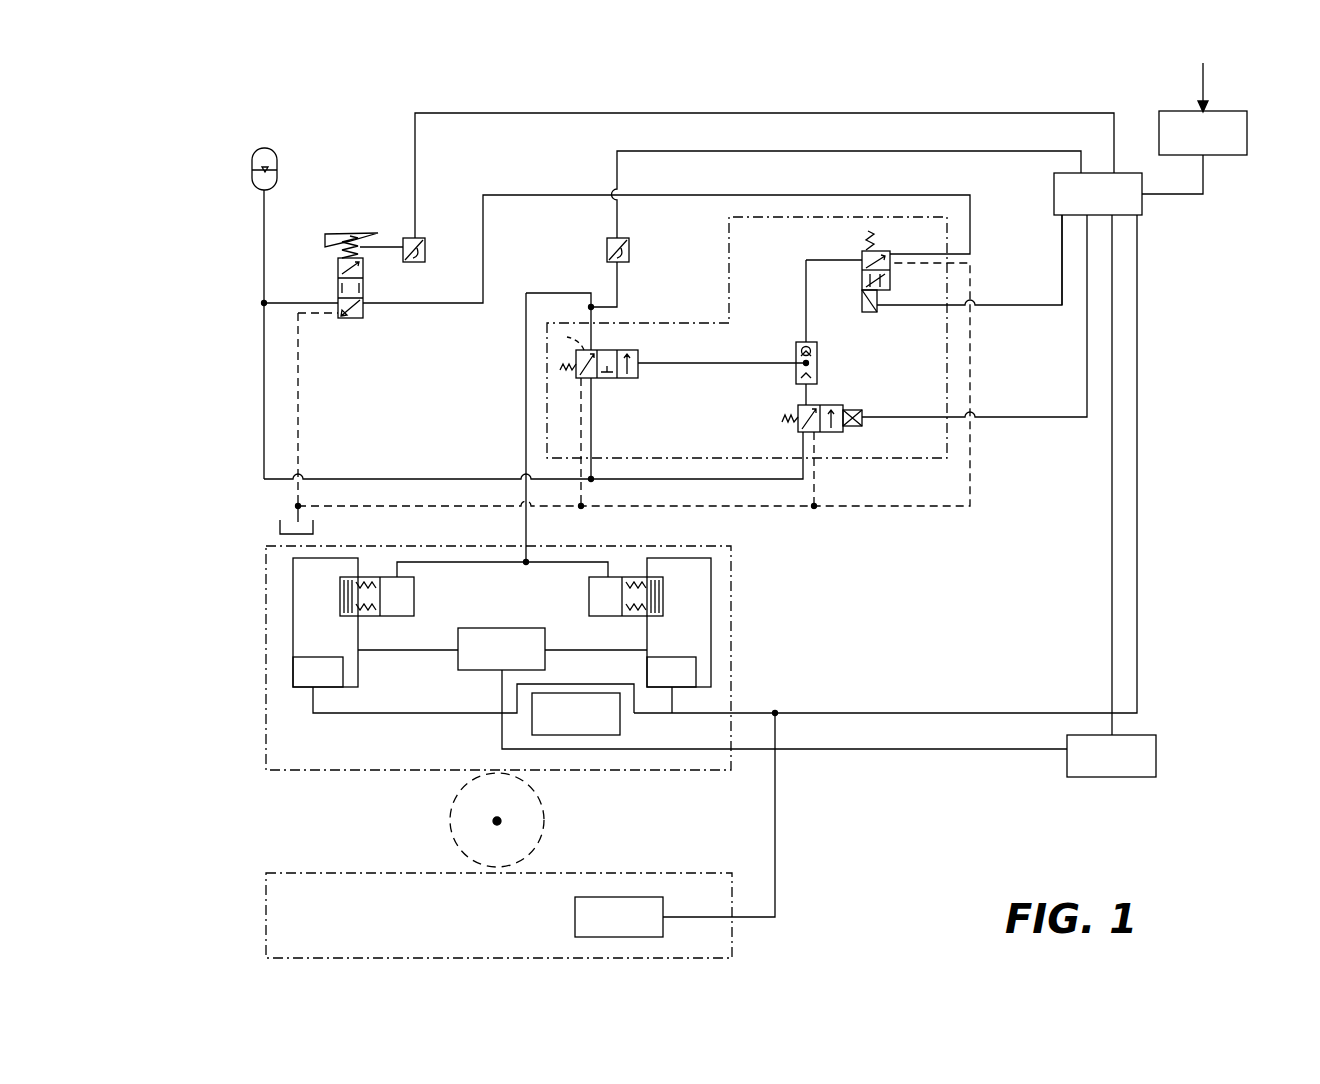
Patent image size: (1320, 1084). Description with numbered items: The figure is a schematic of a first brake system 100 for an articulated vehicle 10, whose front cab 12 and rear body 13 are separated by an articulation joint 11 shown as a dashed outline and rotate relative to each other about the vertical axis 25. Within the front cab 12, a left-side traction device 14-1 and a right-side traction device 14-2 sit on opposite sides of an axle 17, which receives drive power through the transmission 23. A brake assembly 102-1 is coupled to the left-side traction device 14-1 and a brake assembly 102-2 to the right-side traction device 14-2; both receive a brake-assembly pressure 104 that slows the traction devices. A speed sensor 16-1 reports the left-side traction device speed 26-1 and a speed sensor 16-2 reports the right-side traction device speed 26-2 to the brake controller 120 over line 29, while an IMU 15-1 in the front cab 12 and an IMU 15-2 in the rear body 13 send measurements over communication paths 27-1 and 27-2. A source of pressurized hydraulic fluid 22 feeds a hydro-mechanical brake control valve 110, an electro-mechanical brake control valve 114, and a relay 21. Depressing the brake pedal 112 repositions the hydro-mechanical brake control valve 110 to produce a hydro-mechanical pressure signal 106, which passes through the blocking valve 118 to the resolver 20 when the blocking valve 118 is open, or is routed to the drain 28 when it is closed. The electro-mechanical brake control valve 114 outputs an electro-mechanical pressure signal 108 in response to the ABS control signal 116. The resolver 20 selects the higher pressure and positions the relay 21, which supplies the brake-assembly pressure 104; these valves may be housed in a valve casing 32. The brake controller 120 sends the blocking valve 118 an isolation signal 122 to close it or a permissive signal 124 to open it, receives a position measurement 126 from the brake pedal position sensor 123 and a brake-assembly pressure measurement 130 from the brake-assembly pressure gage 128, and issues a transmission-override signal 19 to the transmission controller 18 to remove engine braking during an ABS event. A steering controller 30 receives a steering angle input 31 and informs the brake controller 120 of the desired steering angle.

The articulated vehicle 10 is at (206, 546).
The articulation joint 11 is at (546, 823).
The front cab 12 is at (300, 771).
The rear body 13 is at (296, 873).
The left-side traction device 14-1 is at (293, 621).
The right-side traction device 14-2 is at (712, 618).
The IMU 15-1 is at (576, 714).
The IMU 15-2 is at (619, 917).
The speed sensor 16-1 is at (318, 672).
The speed sensor 16-2 is at (671, 672).
The axle 17 is at (582, 650).
The transmission controller 18 is at (1111, 756).
The transmission-override signal 19 is at (1110, 522).
The resolver 20 is at (818, 352).
The relay 21 is at (606, 350).
The source of pressurized hydraulic fluid 22 is at (266, 147).
The transmission 23 is at (501, 649).
The vertical axis 25 is at (500, 817).
The left-side traction device speed 26-1 is at (396, 716).
The right-side traction device speed 26-2 is at (673, 700).
The communication path 27-1 is at (655, 715).
The communication path 27-2 is at (776, 836).
The drain 28 is at (297, 505).
The signal line 29 is at (938, 751).
The steering controller 30 is at (1203, 133).
The steering angle input 31 is at (1204, 82).
The valve casing 32 is at (660, 323).
The first brake system 100 is at (1118, 103).
The brake assembly 102-1 is at (415, 598).
The brake assembly 102-2 is at (587, 598).
The brake-assembly pressure 104 is at (524, 410).
The hydro-mechanical pressure signal 106 is at (382, 306).
The electro-mechanical pressure signal 108 is at (803, 402).
The hydro-mechanical brake control valve 110 is at (338, 262).
The brake pedal 112 is at (338, 232).
The electro-mechanical brake control valve 114 is at (846, 408).
The ABS control signal 116 is at (1012, 417).
The blocking valve 118 is at (882, 250).
The brake controller 120 is at (1128, 185).
The isolation signal 122 is at (969, 260).
The permissive signal 124 is at (1060, 304).
The brake pedal position sensor 123 is at (425, 241).
The position measurement 126 is at (634, 113).
The brake-assembly pressure gage 128 is at (631, 252).
The brake-assembly pressure measurement 130 is at (738, 151).